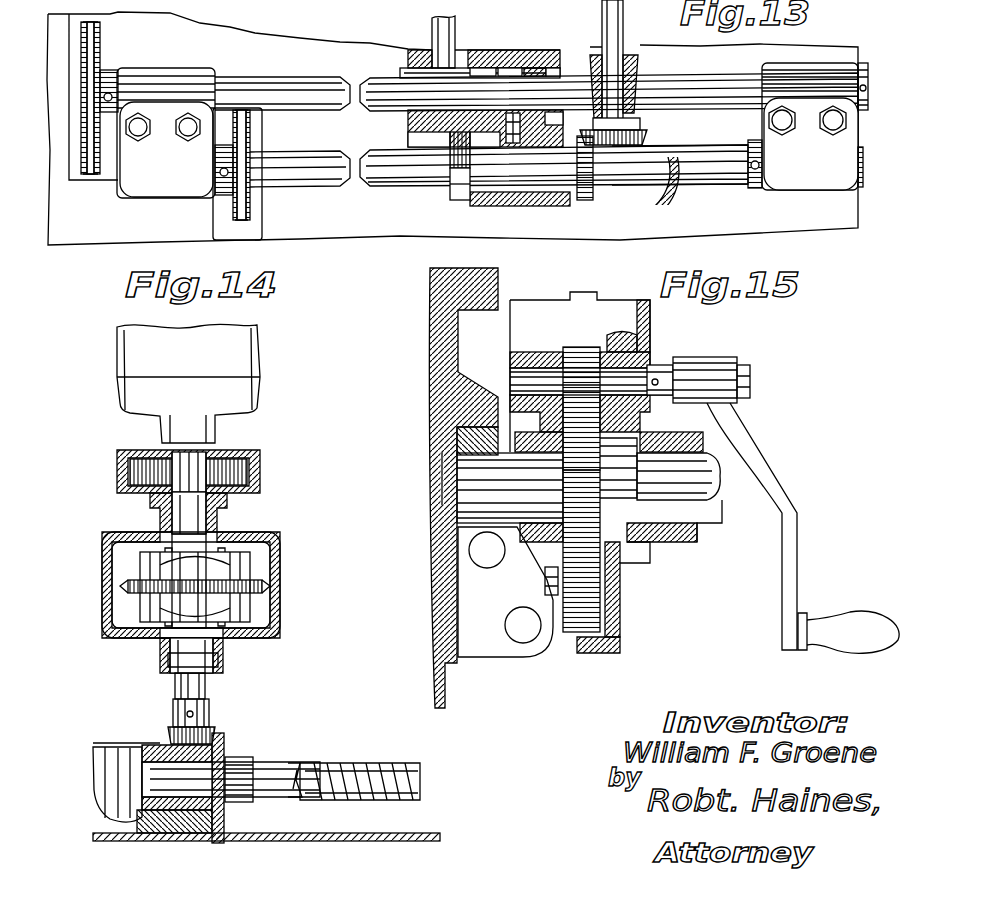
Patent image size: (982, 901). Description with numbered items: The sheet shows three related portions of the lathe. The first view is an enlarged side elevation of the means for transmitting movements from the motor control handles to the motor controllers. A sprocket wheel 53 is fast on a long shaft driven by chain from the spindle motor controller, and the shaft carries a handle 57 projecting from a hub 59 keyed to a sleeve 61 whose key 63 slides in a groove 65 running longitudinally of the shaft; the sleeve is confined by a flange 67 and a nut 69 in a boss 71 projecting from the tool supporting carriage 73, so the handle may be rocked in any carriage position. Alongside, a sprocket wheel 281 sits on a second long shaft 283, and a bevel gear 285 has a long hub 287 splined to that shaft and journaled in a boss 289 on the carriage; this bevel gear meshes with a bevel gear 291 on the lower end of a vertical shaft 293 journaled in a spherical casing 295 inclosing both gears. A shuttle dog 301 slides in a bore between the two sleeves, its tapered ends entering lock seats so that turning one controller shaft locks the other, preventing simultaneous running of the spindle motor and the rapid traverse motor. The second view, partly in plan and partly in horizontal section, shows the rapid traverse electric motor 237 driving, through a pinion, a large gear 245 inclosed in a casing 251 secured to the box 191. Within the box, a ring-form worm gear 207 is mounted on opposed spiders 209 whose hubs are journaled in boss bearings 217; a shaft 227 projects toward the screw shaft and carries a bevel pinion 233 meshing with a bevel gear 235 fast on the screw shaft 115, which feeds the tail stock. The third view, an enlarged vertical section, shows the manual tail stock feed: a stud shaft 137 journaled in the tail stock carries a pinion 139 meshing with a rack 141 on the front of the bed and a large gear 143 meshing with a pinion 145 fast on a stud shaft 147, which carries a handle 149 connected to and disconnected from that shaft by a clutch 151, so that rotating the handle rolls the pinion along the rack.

In FIG. 13, the sprocket wheel 53 is at (101, 40).
In FIG. 13, the sprocket wheel 281 is at (252, 202).
In FIG. 13, the long shaft 283 is at (388, 187).
In FIG. 13, the handle 57 is at (432, 26).
In FIG. 13, the hub 59 is at (428, 52).
In FIG. 13, the sleeve 61 is at (402, 70).
In FIG. 13, the flange 67 is at (463, 50).
In FIG. 13, the boss 71 is at (483, 68).
In FIG. 13, the key 63 is at (510, 68).
In FIG. 13, the groove 65 is at (533, 68).
In FIG. 13, the nut 69 is at (556, 66).
In FIG. 13, the tool supporting carriage 73 is at (542, 192).
In FIG. 13, the shuttle dog 301 is at (504, 128).
In FIG. 13, the long hub 287 is at (500, 206).
In FIG. 13, the boss 289 is at (524, 218).
In FIG. 13, the bevel gear 285 is at (592, 199).
In FIG. 13, the vertical shaft 293 is at (624, 34).
In FIG. 13, the bevel gear 291 is at (652, 122).
In FIG. 13, the spherical casing 295 is at (656, 208).
In FIG. 14, the electric motor 237 is at (250, 358).
In FIG. 14, the casing 251 is at (262, 458).
In FIG. 14, the large gear 245 is at (248, 468).
In FIG. 14, the spiders 209 is at (262, 546).
In FIG. 14, the box 191 is at (282, 610).
In FIG. 14, the worm gear 207 is at (262, 582).
In FIG. 14, the boss bearings 217 is at (224, 652).
In FIG. 14, the shaft 227 is at (206, 686).
In FIG. 14, the bevel pinion 233 is at (213, 744).
In FIG. 14, the bevel gear 235 is at (226, 760).
In FIG. 14, the screw shaft 115 is at (347, 767).
In FIG. 15, the pinion 145 is at (513, 330).
In FIG. 15, the large gear 143 is at (600, 603).
In FIG. 15, the rack 141 is at (465, 438).
In FIG. 15, the pinion 139 is at (470, 480).
In FIG. 15, the stud shaft 137 is at (690, 462).
In FIG. 15, the stud shaft 147 is at (622, 380).
In FIG. 15, the clutch 151 is at (687, 376).
In FIG. 15, the handle 149 is at (797, 567).